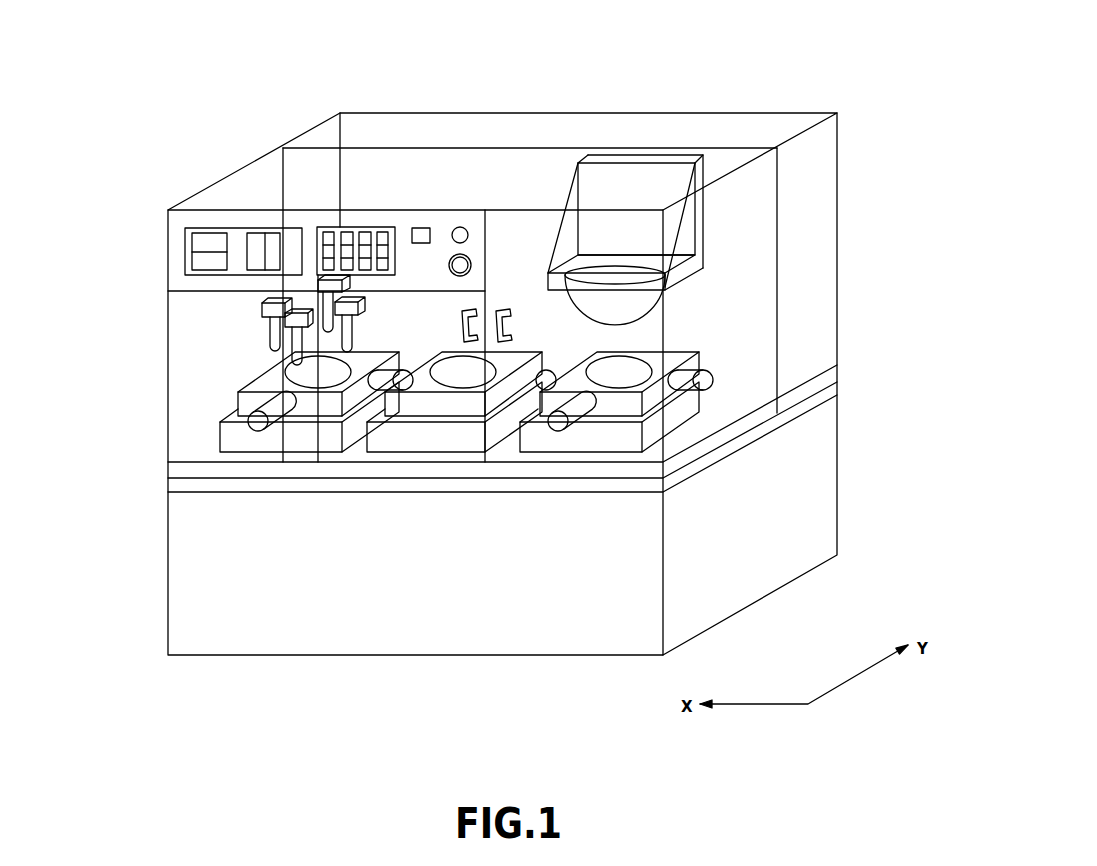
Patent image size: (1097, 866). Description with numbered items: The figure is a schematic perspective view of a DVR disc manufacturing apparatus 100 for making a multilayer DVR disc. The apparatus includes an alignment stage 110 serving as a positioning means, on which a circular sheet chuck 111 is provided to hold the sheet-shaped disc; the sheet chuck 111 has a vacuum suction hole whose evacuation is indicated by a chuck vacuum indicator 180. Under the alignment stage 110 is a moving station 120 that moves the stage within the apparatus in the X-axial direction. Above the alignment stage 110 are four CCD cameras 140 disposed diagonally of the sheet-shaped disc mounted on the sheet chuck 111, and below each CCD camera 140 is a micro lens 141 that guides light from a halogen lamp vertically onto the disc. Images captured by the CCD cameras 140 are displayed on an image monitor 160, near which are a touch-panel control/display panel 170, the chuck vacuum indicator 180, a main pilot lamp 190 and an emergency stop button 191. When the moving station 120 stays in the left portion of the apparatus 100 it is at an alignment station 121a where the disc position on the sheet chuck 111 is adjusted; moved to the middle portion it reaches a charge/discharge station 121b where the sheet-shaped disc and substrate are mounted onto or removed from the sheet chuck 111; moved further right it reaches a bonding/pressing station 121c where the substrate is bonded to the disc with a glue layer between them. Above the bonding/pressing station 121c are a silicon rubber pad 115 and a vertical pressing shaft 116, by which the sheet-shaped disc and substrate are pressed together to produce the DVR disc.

The DVR disc manufacturing apparatus 100 is at (780, 88).
The alignment stage 110 is at (245, 405).
The sheet chuck 111 is at (342, 370).
The silicon rubber pad 115 is at (633, 305).
The vertical pressing shaft 116 is at (707, 220).
The moving station 120 is at (223, 431).
The alignment station 121a is at (372, 399).
The charge/discharge station 121b is at (383, 460).
The bonding/pressing station 121c is at (703, 433).
The CCD camera 140 is at (262, 310).
The micro lens 141 is at (270, 343).
The image monitor 160 is at (185, 258).
The touch-panel control/display panel 170 is at (327, 227).
The chuck vacuum indicator 180 is at (423, 226).
The main pilot lamp 190 is at (462, 227).
The emergency stop button 191 is at (470, 262).